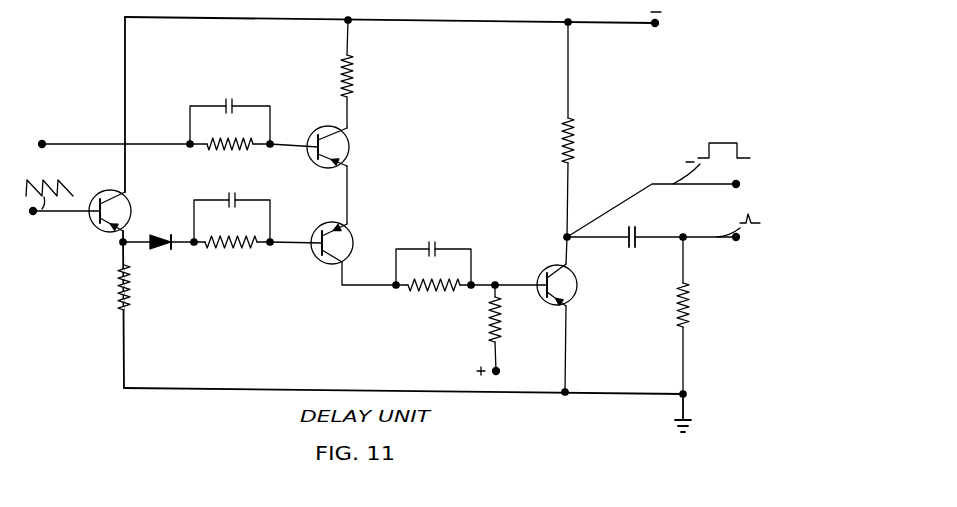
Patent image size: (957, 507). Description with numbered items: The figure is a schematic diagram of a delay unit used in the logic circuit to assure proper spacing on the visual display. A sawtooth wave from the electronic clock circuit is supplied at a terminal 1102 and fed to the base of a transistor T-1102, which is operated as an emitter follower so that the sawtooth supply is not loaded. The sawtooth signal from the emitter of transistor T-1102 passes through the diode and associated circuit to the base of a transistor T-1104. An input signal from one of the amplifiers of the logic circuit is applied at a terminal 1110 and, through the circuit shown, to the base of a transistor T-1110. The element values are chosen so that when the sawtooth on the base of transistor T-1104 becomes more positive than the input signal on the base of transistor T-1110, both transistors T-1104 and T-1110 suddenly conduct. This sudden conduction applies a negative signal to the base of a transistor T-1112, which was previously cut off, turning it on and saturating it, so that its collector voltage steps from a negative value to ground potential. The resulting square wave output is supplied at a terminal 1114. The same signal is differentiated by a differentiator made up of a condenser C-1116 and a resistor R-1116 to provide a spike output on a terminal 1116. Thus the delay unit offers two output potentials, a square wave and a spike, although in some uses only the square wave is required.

The terminal 1110 is at (52, 133).
The terminal 1102 is at (33, 211).
The transistor T-1102 is at (125, 205).
The transistor T-1110 is at (346, 141).
The transistor T-1104 is at (348, 235).
The transistor T-1112 is at (574, 289).
The condenser C-1116 is at (632, 231).
The resistor R-1116 is at (689, 303).
The terminal 1114 is at (736, 184).
The terminal 1116 is at (736, 237).